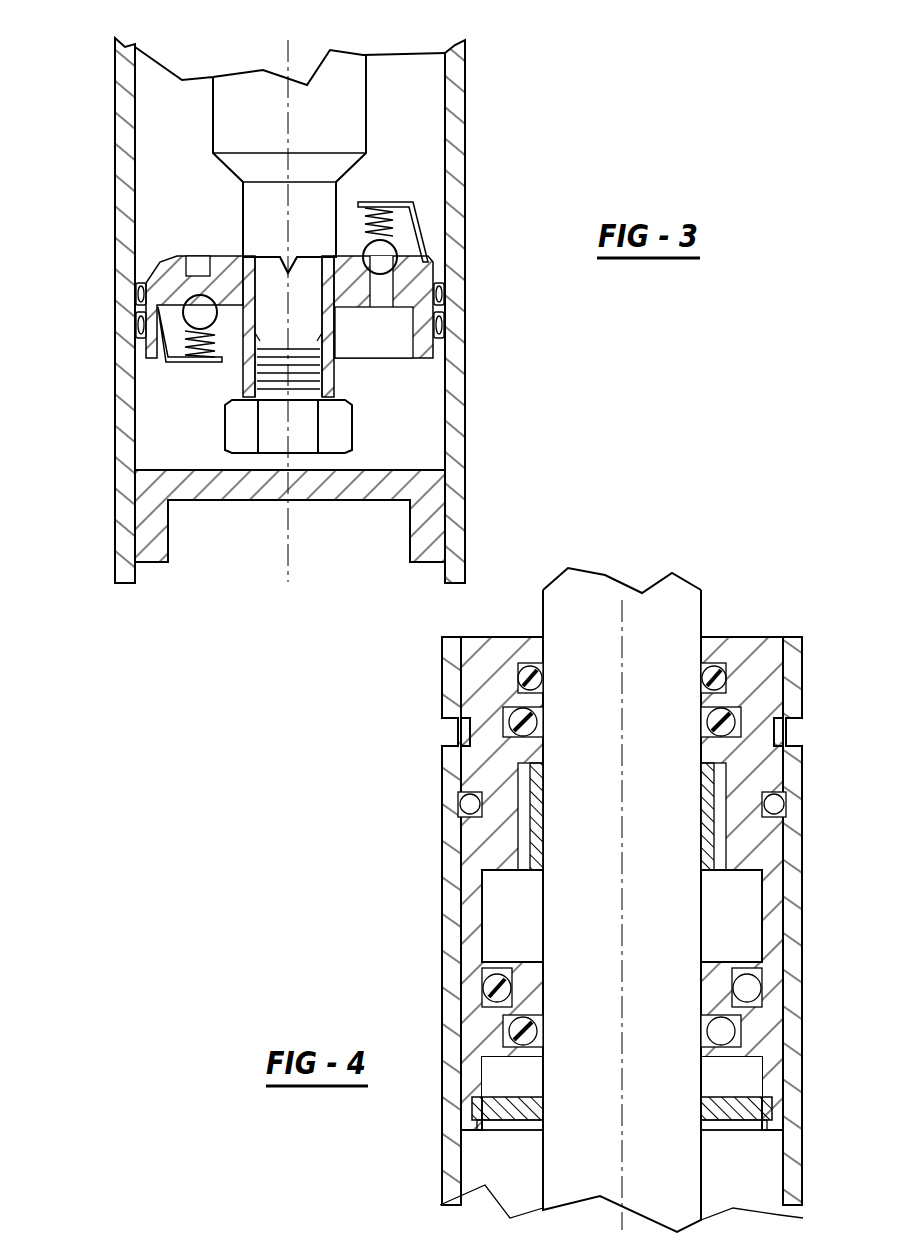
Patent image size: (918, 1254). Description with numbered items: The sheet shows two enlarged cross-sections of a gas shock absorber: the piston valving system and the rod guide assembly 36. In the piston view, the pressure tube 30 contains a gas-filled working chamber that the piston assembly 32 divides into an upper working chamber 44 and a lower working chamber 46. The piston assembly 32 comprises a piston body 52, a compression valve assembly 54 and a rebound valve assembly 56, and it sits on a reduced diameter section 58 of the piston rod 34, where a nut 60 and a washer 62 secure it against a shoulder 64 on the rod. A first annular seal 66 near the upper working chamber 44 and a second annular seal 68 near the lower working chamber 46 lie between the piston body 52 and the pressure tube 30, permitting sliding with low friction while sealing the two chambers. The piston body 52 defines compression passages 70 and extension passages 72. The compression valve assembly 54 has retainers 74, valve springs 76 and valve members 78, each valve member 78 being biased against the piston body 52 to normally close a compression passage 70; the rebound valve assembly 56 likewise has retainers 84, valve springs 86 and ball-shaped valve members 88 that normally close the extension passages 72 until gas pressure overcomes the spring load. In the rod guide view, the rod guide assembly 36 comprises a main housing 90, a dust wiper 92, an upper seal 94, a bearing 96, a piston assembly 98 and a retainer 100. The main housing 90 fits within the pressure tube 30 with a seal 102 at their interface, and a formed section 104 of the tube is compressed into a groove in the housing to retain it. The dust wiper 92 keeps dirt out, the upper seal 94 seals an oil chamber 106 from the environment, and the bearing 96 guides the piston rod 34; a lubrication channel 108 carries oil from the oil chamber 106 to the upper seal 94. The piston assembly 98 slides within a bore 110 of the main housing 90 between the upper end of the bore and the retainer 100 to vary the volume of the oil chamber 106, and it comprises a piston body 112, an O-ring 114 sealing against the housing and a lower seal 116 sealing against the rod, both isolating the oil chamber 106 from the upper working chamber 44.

In FIG. 3, the pressure tube 30 is at (458, 92).
In FIG. 4, the pressure tube 30 is at (797, 668).
In FIG. 3, the piston assembly 32 is at (187, 211).
In FIG. 3, the piston rod 34 is at (323, 108).
In FIG. 4, the piston rod 34 is at (690, 578).
In FIG. 4, the rod guide assembly 36 is at (511, 679).
In FIG. 3, the upper working chamber 44 is at (172, 112).
In FIG. 4, the upper working chamber 44 is at (743, 1175).
In FIG. 3, the lower working chamber 46 is at (402, 438).
In FIG. 3, the piston body 52 is at (442, 284).
In FIG. 3, the compression valve assembly 54 is at (428, 202).
In FIG. 3, the rebound valve assembly 56 is at (177, 387).
In FIG. 3, the reduced diameter section 58 is at (270, 292).
In FIG. 3, the nut 60 is at (302, 435).
In FIG. 3, the washer 62 is at (334, 387).
In FIG. 3, the shoulder 64 is at (300, 268).
In FIG. 3, the first annular seal 66 is at (140, 288).
In FIG. 3, the second annular seal 68 is at (140, 330).
In FIG. 3, the compression passages 70 is at (385, 298).
In FIG. 3, the extension passages 72 is at (200, 273).
In FIG. 3, the retainers 74 is at (390, 208).
In FIG. 3, the valve springs 76 is at (418, 225).
In FIG. 3, the valve members 78 is at (385, 252).
In FIG. 3, the retainers 84 is at (207, 360).
In FIG. 3, the valve springs 86 is at (190, 343).
In FIG. 3, the valve members 88 is at (197, 307).
In FIG. 4, the main housing 90 is at (485, 843).
In FIG. 4, the dust wiper 92 is at (727, 667).
In FIG. 4, the upper seal 94 is at (727, 728).
In FIG. 4, the bearing 96 is at (737, 832).
In FIG. 4, the piston assembly 98 is at (471, 999).
In FIG. 4, the retainer 100 is at (503, 1118).
In FIG. 4, the seal 102 is at (472, 800).
In FIG. 4, the formed section 104 is at (461, 737).
In FIG. 4, the oil chamber 106 is at (507, 917).
In FIG. 4, the lubrication channel 108 is at (525, 821).
In FIG. 4, the bore 110 is at (757, 920).
In FIG. 4, the piston body 112 is at (747, 1020).
In FIG. 4, the O-ring 114 is at (747, 987).
In FIG. 4, the lower seal 116 is at (720, 1037).